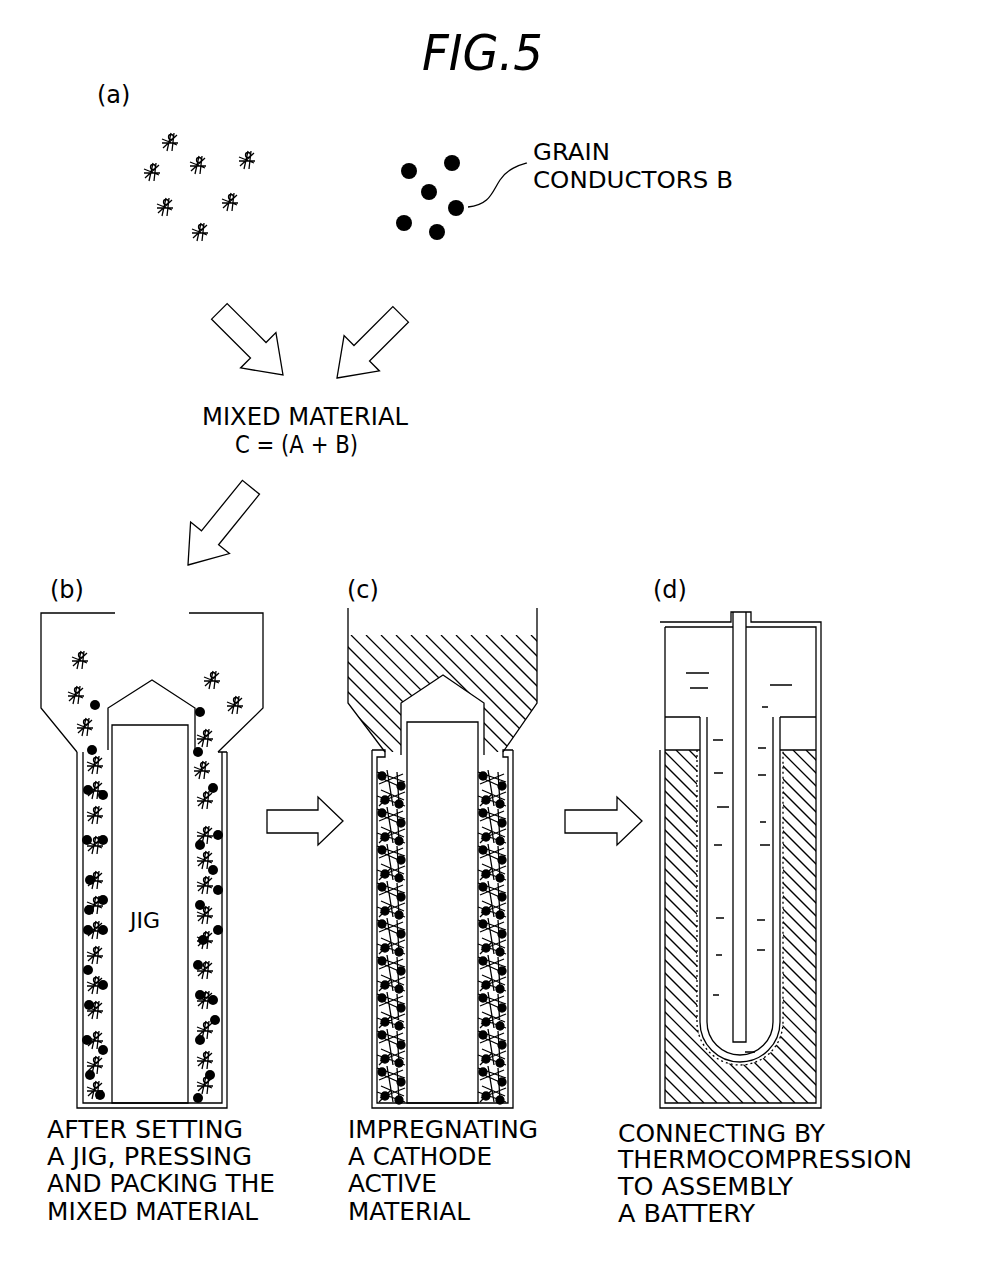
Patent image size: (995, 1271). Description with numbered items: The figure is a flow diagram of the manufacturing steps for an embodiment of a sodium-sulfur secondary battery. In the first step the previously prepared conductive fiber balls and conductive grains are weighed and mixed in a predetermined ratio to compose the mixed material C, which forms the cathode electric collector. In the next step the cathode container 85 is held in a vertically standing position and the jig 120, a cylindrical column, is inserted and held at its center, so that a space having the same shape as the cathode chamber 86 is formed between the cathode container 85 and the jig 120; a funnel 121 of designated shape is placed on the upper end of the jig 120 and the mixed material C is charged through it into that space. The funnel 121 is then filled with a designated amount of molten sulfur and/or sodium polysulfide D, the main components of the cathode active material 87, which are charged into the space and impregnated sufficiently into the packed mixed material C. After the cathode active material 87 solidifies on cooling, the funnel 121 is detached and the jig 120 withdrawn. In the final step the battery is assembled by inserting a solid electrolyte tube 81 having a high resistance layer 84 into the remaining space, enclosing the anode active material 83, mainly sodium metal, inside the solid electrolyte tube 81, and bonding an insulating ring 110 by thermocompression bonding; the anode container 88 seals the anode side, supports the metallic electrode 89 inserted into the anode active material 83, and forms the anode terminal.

The funnel 121 is at (263, 700).
The jig 120 is at (423, 765).
The cathode chamber 86 is at (225, 782).
The cathode container 85 is at (228, 877).
The metallic electrode 89 is at (750, 657).
The anode active material 83 is at (677, 664).
The anode container 88 is at (822, 645).
The insulating ring 110 is at (812, 737).
The high resistance layer 84 is at (783, 780).
The solid electrolyte tube 81 is at (783, 860).
The cathode active material 87 is at (785, 930).
The mixed material C is at (217, 672).
The molten sulfur and/or sodium polysulfide D is at (517, 667).